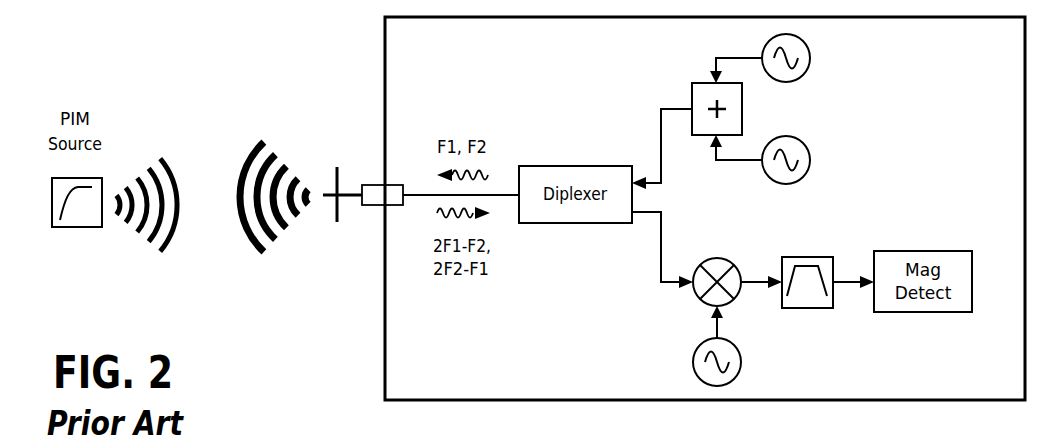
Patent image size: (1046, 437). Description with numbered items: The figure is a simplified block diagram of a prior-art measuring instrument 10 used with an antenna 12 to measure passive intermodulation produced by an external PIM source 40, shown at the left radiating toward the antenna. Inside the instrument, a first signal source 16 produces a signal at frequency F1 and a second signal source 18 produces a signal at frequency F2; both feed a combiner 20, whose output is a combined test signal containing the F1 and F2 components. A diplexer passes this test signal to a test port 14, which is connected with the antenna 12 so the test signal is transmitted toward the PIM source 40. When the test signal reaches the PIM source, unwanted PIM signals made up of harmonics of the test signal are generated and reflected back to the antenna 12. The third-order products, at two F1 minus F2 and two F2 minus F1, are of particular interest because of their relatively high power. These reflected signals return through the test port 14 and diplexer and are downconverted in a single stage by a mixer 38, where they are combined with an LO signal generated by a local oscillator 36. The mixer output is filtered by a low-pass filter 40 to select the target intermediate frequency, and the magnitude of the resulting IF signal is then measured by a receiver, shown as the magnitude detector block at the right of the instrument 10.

The measuring instrument 10 is at (412, 391).
The antenna 12 is at (330, 141).
The test port 14 is at (368, 207).
The first signal source 16 is at (782, 82).
The second signal source 18 is at (782, 184).
The combiner 20 is at (692, 92).
The local oscillator 36 is at (732, 340).
The mixer 38 is at (713, 254).
The low-pass filter 40 is at (802, 254).